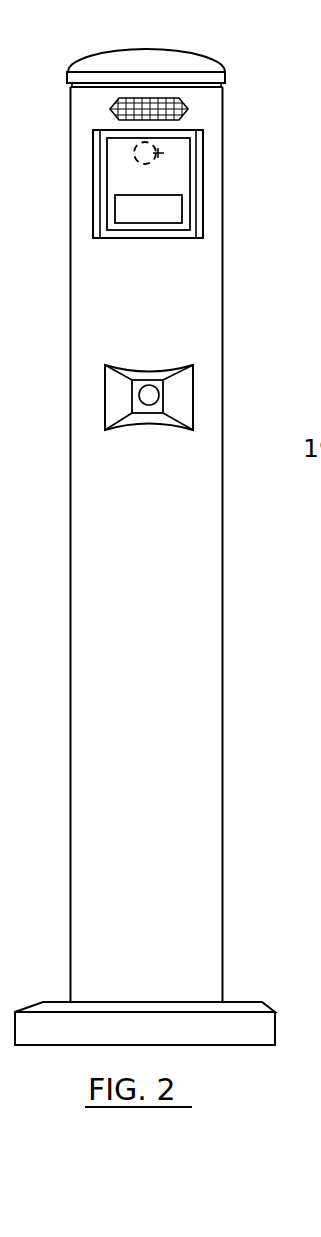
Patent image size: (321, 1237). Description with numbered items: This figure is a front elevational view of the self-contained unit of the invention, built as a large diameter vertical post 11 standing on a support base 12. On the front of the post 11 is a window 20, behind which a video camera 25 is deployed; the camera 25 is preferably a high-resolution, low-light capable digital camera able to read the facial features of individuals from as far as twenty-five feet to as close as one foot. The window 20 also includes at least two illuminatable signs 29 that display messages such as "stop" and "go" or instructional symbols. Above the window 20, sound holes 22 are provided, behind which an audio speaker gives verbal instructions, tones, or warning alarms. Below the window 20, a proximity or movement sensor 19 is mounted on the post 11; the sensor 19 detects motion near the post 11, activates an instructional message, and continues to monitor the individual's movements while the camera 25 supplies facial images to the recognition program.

The vertical post 11 is at (187, 660).
The support base 12 is at (228, 1022).
The proximity or movement sensor 19 is at (150, 390).
The window 20 is at (128, 177).
The sound holes 22 is at (187, 107).
The video camera 25 is at (167, 151).
The illuminatable signs 29 is at (155, 208).